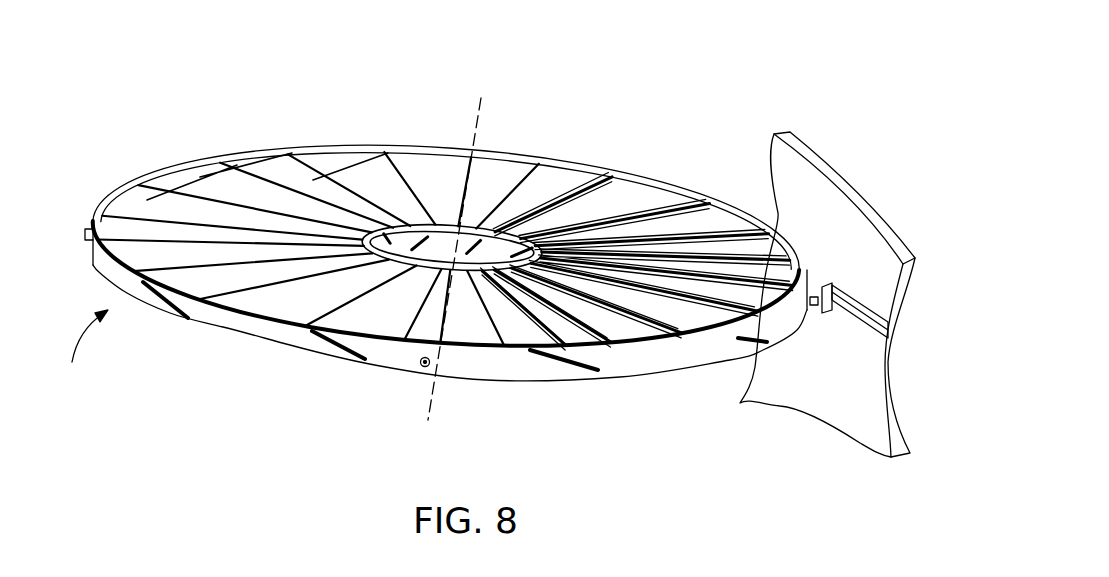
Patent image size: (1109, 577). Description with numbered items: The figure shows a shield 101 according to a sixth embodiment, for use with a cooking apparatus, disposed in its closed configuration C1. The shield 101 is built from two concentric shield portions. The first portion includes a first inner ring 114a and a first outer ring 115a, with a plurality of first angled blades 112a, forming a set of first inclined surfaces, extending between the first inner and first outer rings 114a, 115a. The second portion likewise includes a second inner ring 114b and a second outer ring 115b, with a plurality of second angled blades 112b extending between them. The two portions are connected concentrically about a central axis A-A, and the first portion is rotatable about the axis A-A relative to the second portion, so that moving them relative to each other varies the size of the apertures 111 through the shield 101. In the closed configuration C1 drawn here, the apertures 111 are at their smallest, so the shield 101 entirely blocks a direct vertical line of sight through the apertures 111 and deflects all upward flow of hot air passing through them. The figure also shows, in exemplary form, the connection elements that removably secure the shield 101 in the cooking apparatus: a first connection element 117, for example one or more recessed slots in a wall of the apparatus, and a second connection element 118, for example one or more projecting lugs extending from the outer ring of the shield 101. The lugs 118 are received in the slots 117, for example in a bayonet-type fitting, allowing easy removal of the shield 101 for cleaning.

The shield 101 is at (688, 77).
The apertures 111 is at (697, 325).
The first angled blades 112a is at (270, 177).
The second angled blades 112b is at (360, 310).
The first inner ring 114a is at (493, 230).
The second inner ring 114b is at (497, 262).
The first outer ring 115a is at (368, 148).
The second outer ring 115b is at (388, 350).
The first connection element 117 is at (870, 315).
The second connection element 118 is at (84, 231).
The central axis A is at (455, 262).
The closed configuration C1 is at (83, 352).